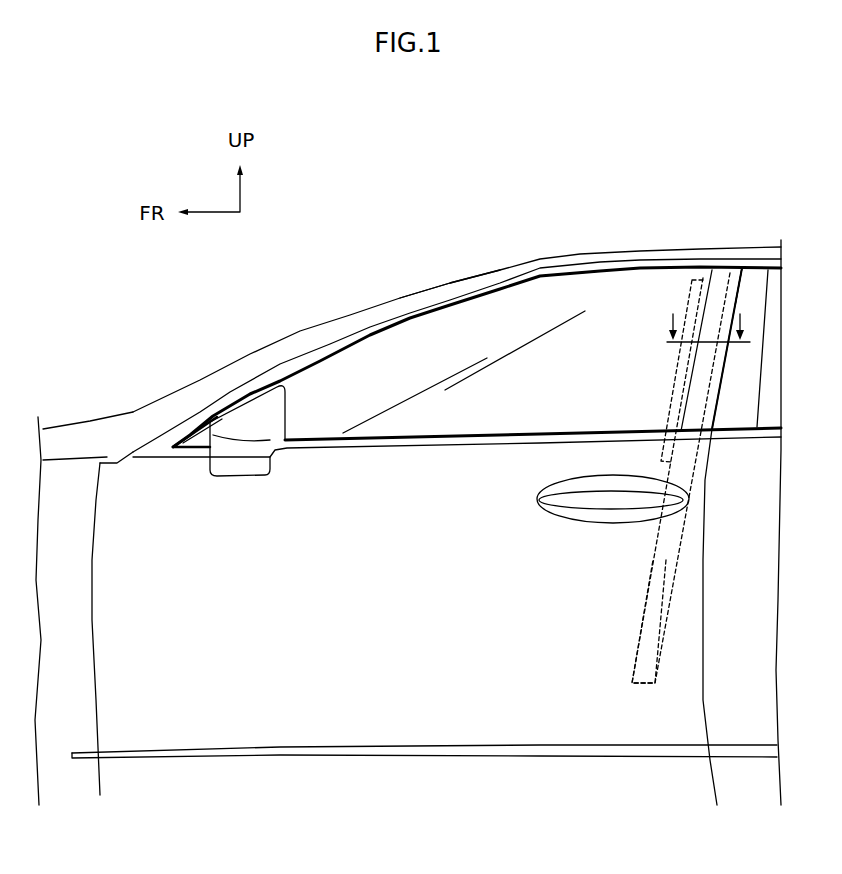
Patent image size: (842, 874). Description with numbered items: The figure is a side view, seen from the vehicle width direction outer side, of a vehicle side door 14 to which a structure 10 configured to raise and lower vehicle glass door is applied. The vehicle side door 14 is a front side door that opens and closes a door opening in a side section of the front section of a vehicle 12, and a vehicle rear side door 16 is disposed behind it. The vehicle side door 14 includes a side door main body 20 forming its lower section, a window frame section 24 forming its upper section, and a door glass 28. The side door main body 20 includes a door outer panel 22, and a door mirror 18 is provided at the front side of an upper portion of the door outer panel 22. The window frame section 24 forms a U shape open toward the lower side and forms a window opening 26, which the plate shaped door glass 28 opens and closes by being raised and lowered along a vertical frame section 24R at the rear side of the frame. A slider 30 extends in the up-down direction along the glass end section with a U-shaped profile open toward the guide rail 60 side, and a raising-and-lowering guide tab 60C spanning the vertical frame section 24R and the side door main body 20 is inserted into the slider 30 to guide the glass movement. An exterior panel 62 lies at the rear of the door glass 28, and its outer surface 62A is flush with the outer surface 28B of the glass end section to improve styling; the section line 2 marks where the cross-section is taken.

The section line 2- 2 is at (707, 319).
The structure configured to raise and lower vehicle glass door 10 is at (642, 374).
The vehicle 12 is at (677, 206).
The vehicle side door 14 is at (612, 754).
The vehicle rear side door 16 is at (742, 754).
The door mirror 18 is at (253, 406).
The side door main body 20 is at (436, 701).
The door outer panel 22 is at (501, 707).
The window frame section 24 is at (341, 320).
The vertical frame section 24R is at (712, 315).
The window opening 26 is at (445, 307).
The door glass 28 is at (504, 325).
The outer surface 28B is at (538, 302).
The slider 30 is at (677, 357).
The guide rail 60 is at (714, 404).
The raising-and-lowering guide tab 60C is at (655, 538).
The exterior panel 62 is at (733, 376).
The outer surface 62A is at (720, 287).